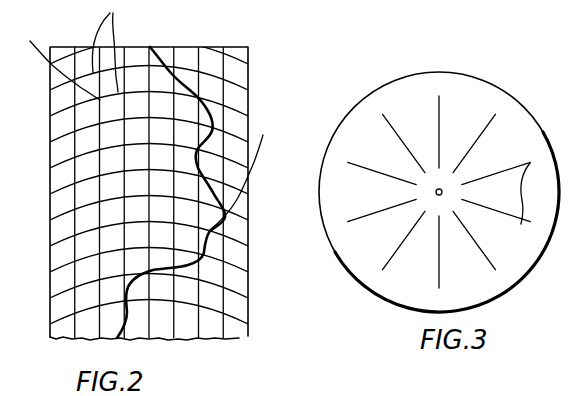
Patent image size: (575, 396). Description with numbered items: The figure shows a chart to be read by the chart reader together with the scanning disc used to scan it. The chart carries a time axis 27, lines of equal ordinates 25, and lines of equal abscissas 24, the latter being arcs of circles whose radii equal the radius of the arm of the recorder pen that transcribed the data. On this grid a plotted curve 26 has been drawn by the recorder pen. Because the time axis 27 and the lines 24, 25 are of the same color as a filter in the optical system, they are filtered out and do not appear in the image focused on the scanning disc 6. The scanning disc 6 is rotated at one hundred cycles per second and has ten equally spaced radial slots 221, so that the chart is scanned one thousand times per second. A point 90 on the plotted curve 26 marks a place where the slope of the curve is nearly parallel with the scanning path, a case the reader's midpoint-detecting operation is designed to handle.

In FIG. 3, the scanning disc 6 is at (468, 75).
In FIG. 3, the radial slots 221 is at (530, 163).
In FIG. 2, the lines of equal abscissas 24 is at (108, 46).
In FIG. 2, the lines of equal ordinates 25 is at (73, 72).
In FIG. 2, the plotted curve 26 is at (247, 125).
In FIG. 2, the time axis 27 is at (150, 47).
In FIG. 2, the point on the curve 90 is at (223, 290).